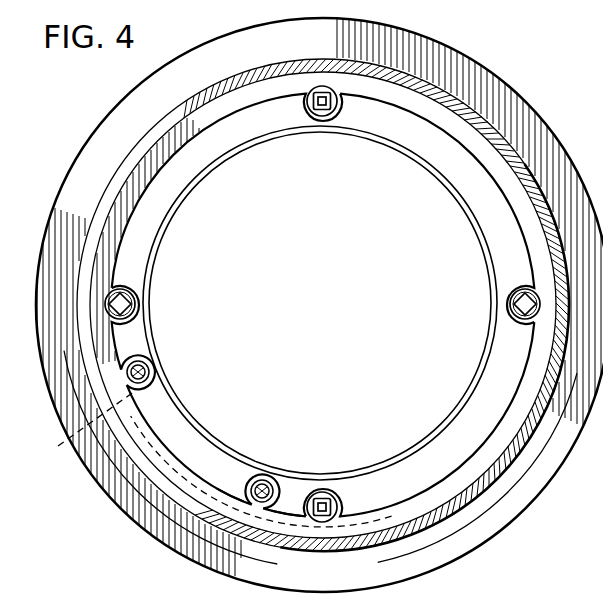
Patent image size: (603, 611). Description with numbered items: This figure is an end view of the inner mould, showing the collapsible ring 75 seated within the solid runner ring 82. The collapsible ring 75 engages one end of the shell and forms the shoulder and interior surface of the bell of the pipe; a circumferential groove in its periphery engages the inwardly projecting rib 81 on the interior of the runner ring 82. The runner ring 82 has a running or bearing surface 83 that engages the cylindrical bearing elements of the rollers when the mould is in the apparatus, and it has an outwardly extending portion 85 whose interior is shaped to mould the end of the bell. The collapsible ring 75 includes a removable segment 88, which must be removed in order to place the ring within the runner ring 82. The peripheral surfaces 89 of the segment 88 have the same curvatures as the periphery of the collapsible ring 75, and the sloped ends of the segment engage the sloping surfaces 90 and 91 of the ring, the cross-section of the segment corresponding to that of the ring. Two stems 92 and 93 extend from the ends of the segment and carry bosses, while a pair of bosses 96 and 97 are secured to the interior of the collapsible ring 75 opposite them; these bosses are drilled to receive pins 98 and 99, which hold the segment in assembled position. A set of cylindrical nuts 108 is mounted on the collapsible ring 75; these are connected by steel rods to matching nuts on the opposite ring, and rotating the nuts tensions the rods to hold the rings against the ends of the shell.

The collapsible ring 75 is at (206, 112).
The inwardly projecting rib 81 is at (128, 170).
The solid runner ring 82 is at (503, 82).
The running or bearing surface 83 is at (497, 477).
The outwardly extending portion 85 is at (122, 112).
The removable segment 88 is at (188, 440).
The peripheral surfaces 89 is at (172, 477).
The sloping surface 90 is at (150, 392).
The sloping surface 91 is at (233, 476).
The stem 92 is at (325, 279).
The stem 93 is at (253, 515).
The boss 96 is at (132, 355).
The boss 97 is at (273, 512).
The pin 98 is at (148, 368).
The pin 99 is at (266, 482).
The cylindrical nuts 108 is at (326, 112).